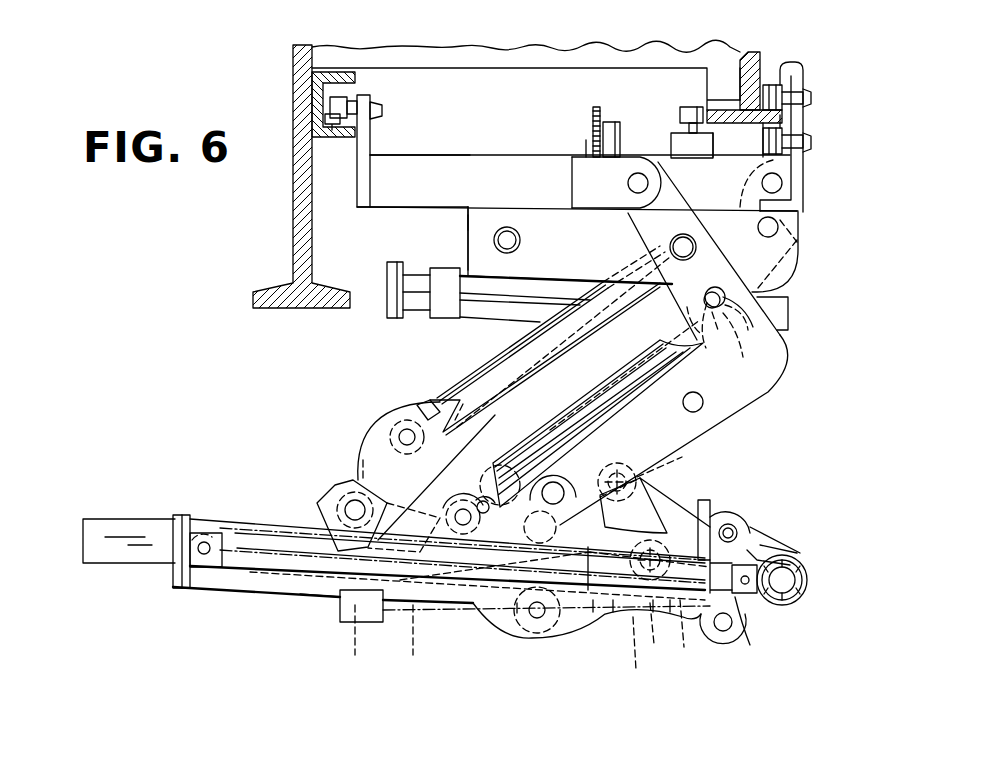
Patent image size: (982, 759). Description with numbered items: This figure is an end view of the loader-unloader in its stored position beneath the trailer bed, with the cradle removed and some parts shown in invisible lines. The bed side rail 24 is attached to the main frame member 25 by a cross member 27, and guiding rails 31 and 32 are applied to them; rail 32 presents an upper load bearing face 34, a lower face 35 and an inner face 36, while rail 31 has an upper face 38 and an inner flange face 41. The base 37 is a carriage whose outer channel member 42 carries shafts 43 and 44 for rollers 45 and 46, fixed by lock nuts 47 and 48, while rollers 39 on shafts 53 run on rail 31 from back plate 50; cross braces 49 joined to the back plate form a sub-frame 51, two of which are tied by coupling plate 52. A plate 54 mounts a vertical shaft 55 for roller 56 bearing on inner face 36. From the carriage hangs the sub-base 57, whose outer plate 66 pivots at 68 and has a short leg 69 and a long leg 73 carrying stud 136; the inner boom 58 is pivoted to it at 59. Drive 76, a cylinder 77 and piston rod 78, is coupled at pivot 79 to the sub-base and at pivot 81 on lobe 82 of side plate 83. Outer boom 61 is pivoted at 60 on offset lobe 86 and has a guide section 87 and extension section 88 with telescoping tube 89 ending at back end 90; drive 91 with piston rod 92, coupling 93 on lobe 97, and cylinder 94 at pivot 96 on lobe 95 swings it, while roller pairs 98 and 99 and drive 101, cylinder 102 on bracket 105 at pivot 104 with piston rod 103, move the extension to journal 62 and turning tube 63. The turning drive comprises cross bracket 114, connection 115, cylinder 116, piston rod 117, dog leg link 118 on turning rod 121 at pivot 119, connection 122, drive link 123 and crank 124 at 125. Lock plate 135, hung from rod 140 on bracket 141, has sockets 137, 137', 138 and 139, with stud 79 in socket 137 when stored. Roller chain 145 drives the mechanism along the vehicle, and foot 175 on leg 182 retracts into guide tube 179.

The side rail 24 is at (747, 52).
The main frame member 25 is at (302, 205).
The cross member 27 is at (490, 58).
The guiding rail 31 is at (315, 95).
The guiding rail 32 is at (717, 113).
The upper load bearing face 34 is at (765, 84).
The lower face 35 is at (738, 140).
The inner face 36 is at (700, 110).
The base 37 is at (458, 150).
The upper load bearing face 38 is at (348, 125).
The roller 39 is at (347, 100).
The inner face 41 is at (340, 90).
The outer channel form member 42 is at (800, 198).
The shaft 43 is at (798, 90).
The shaft 44 is at (803, 157).
The roller 45 is at (774, 88).
The roller 46 is at (777, 134).
The lock nut 47 is at (808, 97).
The lock nut 48 is at (811, 141).
The cross brace 49 is at (498, 167).
The back plate 50 is at (368, 146).
The carriage sub-frame 51 is at (390, 210).
The coupling plate 52 is at (610, 122).
The shaft 53 is at (380, 122).
The plate 54 is at (678, 152).
The shaft 55 is at (690, 130).
The roller 56 is at (688, 110).
The sub-base 57 is at (466, 218).
The inner boom 58 is at (590, 296).
The pivot 59 is at (800, 244).
The pivot 60 is at (345, 490).
The outer boom 61 is at (579, 636).
The journal 62 is at (807, 593).
The turning tube 63 is at (802, 573).
The outer plate 66 is at (472, 245).
The pivot 68 is at (776, 184).
The short leg 69 is at (772, 228).
The long leg 73 is at (490, 218).
The reciprocating drive 76 is at (470, 369).
The cylinder 77 is at (522, 338).
The piston rod 78 is at (418, 404).
The pivot 79 is at (684, 238).
The pivot 81 is at (400, 420).
The lobe 82 is at (394, 437).
The inner boom side plate 83 is at (478, 454).
The offset lobe 86 is at (372, 478).
The guide section 87 is at (317, 582).
The extension section 88 is at (748, 600).
The telescoping tube 89 is at (153, 530).
The back end 90 is at (88, 532).
The reciprocating drive 91 is at (634, 412).
The piston rod 92 is at (492, 500).
The pivotal coupling 93 is at (453, 508).
The hydraulic cylinder 94 is at (672, 368).
The lobe 95 is at (742, 345).
The pivot 96 is at (714, 350).
The lobe 97 is at (462, 495).
The front roller pair 98 is at (560, 530).
The back roller pair 99 is at (518, 624).
The reciprocating drive means 101 is at (280, 578).
The cylinder 102 is at (263, 547).
The piston rod 103 is at (745, 640).
The pivot 104 is at (211, 564).
The bracket 105 is at (197, 572).
The cross bracket 114 is at (345, 608).
The pivotal connection 115 is at (362, 648).
The turning cylinder 116 is at (421, 642).
The piston rod 117 is at (641, 657).
The dog leg turning link 118 is at (658, 521).
The pivot 119 is at (666, 635).
The turning rod 121 is at (699, 634).
The pivotal connection 122 is at (660, 469).
The drive link 123 is at (673, 502).
The turning crank 124 is at (797, 545).
The pivot 125 is at (767, 543).
The locking means 135 is at (782, 392).
The stud 136 is at (520, 240).
The socket 137 is at (719, 248).
The hole 137' is at (741, 319).
The socket 138 is at (700, 408).
The socket 139 is at (590, 478).
The support rod 140 is at (628, 186).
The bracket 141 is at (572, 190).
The roller chain 145 is at (566, 114).
The ground engaging foot 175 is at (390, 285).
The guide tube 179 is at (482, 318).
The leg 182 is at (410, 308).